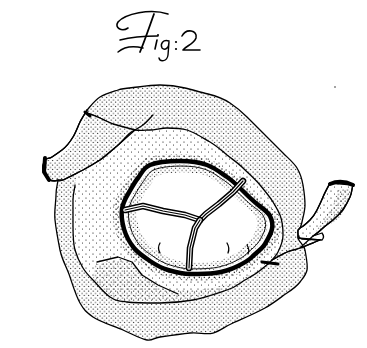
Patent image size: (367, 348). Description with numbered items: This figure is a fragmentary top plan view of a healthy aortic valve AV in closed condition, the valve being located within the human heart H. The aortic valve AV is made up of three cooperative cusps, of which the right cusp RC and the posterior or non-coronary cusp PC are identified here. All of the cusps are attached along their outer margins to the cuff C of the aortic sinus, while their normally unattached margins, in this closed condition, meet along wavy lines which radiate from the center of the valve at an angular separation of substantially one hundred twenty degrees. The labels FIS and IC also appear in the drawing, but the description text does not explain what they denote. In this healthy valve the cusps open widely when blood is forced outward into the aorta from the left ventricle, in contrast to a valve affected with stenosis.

The posterior or non-coronary cusp PC is at (94, 309).
The human heart H is at (305, 158).
The cuff C is at (57, 215).
The aortic valve AV is at (124, 258).
The fissure FIS is at (125, 193).
The right cusp RC is at (200, 182).
The inferior vena cava IC is at (297, 270).